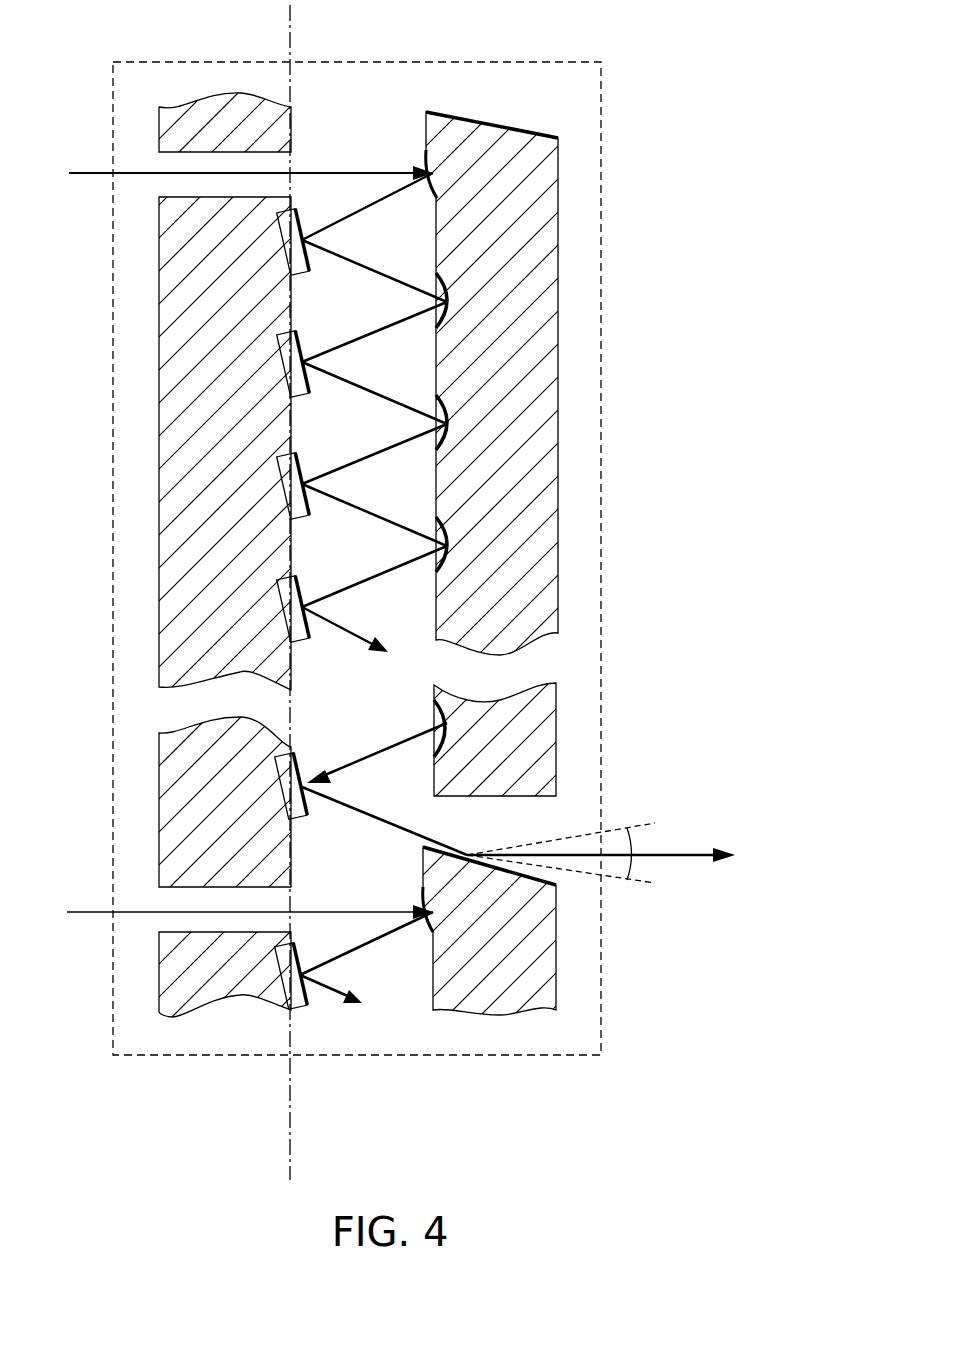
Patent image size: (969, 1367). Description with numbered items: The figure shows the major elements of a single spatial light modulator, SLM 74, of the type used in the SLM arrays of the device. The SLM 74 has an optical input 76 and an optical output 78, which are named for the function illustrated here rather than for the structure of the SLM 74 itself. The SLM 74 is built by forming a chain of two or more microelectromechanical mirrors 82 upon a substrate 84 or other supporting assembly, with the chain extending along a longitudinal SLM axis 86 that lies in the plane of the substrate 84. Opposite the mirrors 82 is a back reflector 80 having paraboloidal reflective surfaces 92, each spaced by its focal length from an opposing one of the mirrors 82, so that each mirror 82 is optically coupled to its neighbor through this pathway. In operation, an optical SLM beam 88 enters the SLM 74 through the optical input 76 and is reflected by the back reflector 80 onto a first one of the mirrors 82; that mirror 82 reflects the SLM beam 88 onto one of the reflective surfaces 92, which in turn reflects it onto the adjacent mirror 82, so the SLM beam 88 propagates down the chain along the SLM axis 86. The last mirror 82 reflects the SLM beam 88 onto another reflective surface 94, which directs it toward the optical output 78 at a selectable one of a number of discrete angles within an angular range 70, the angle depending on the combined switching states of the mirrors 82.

The angular range 70 is at (633, 863).
The SLM 74 is at (508, 60).
The optical input 76 is at (160, 185).
The optical output 78 is at (557, 813).
The back reflector 80 is at (562, 253).
The microelectromechanical mirrors 82 is at (312, 258).
The substrate 84 is at (158, 353).
The SLM axis 86 is at (290, 1077).
The SLM beam 88 is at (92, 171).
The paraboloidal reflective surfaces 92 is at (445, 315).
The reflective surface 94 is at (490, 870).